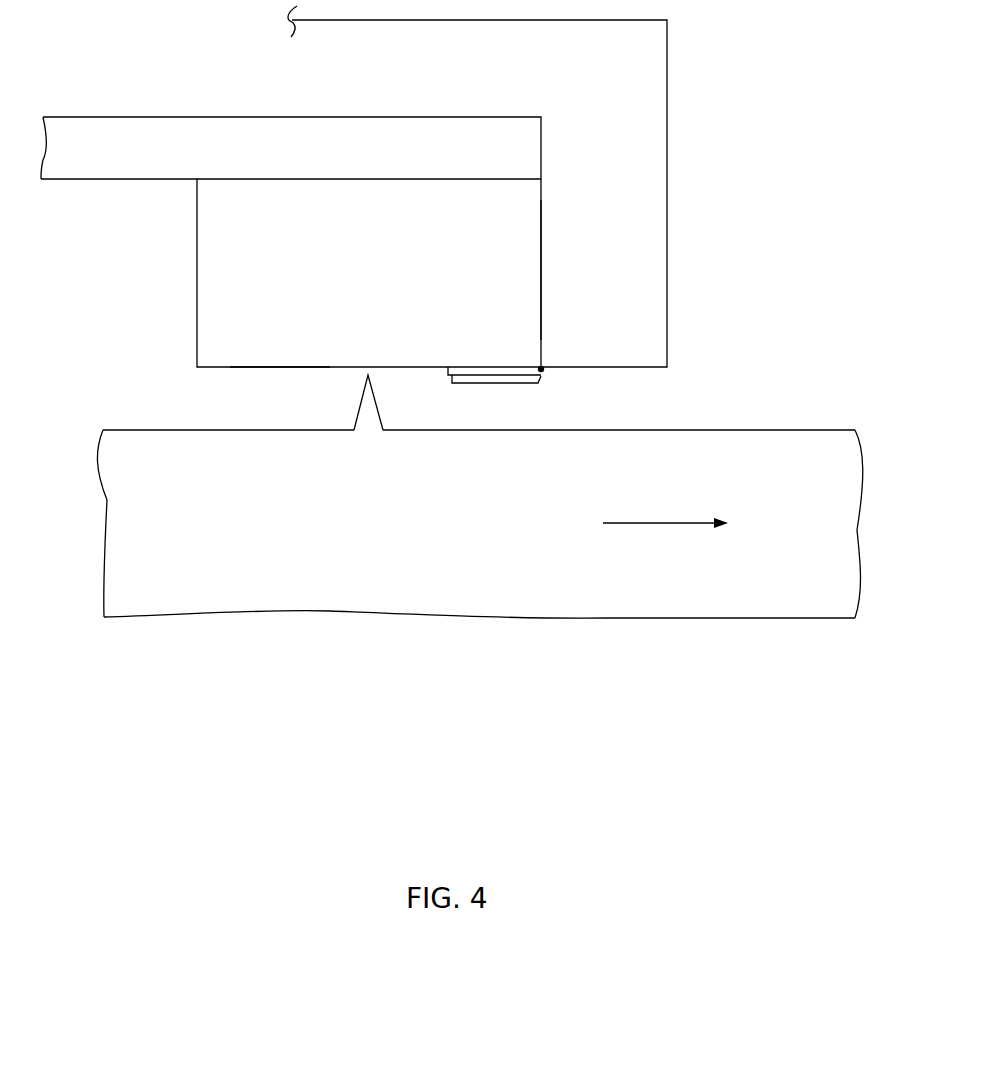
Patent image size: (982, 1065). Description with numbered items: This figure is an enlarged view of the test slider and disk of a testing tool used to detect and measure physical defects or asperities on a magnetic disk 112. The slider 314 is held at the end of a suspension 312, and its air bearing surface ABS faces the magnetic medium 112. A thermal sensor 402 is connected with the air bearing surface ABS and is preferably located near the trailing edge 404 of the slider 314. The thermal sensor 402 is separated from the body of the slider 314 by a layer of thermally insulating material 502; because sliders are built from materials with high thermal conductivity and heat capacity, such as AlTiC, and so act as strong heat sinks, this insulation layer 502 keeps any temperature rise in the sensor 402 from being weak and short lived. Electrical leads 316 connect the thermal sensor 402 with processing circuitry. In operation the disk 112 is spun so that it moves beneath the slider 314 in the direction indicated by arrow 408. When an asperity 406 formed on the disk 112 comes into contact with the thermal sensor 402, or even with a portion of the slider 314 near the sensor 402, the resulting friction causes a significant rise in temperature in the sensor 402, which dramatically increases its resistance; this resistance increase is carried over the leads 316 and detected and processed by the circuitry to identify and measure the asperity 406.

The magnetic disk 112 is at (424, 514).
The suspension 312 is at (262, 150).
The slider 314 is at (330, 293).
The electrical leads 316 is at (667, 78).
The thermal sensor 402 is at (538, 383).
The trailing edge 404 is at (543, 268).
The asperity 406 is at (373, 401).
The arrow 408 is at (668, 521).
The thermal insulation layer 502 is at (488, 372).
The air bearing surface ABS is at (277, 368).